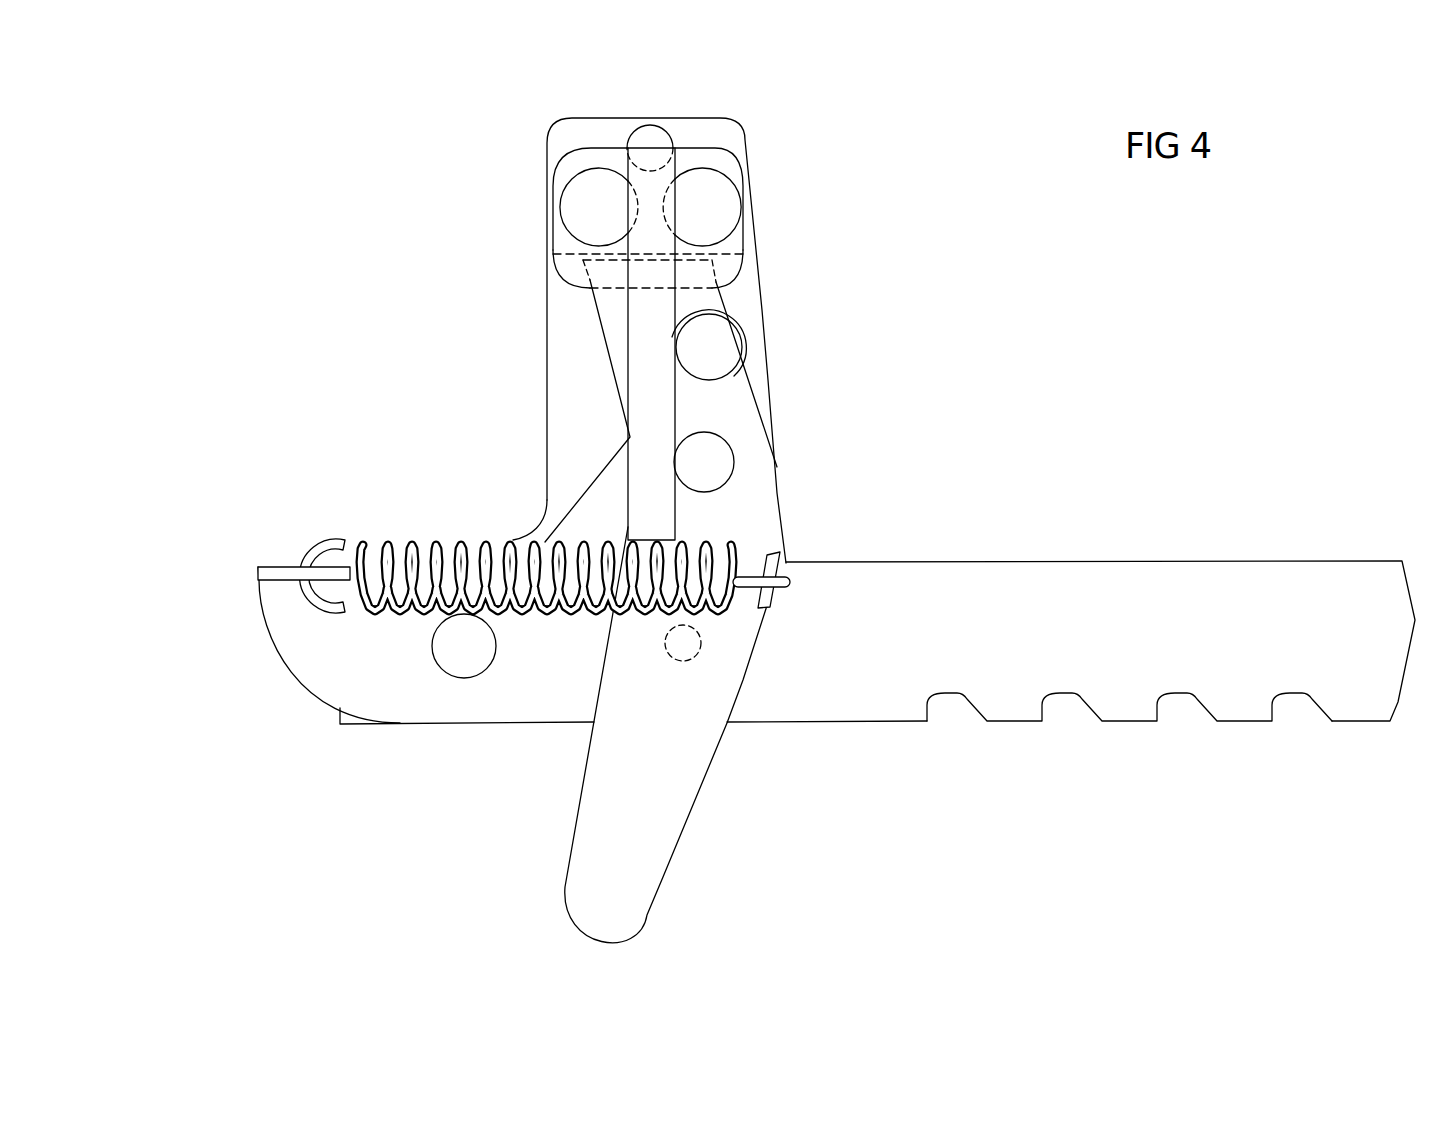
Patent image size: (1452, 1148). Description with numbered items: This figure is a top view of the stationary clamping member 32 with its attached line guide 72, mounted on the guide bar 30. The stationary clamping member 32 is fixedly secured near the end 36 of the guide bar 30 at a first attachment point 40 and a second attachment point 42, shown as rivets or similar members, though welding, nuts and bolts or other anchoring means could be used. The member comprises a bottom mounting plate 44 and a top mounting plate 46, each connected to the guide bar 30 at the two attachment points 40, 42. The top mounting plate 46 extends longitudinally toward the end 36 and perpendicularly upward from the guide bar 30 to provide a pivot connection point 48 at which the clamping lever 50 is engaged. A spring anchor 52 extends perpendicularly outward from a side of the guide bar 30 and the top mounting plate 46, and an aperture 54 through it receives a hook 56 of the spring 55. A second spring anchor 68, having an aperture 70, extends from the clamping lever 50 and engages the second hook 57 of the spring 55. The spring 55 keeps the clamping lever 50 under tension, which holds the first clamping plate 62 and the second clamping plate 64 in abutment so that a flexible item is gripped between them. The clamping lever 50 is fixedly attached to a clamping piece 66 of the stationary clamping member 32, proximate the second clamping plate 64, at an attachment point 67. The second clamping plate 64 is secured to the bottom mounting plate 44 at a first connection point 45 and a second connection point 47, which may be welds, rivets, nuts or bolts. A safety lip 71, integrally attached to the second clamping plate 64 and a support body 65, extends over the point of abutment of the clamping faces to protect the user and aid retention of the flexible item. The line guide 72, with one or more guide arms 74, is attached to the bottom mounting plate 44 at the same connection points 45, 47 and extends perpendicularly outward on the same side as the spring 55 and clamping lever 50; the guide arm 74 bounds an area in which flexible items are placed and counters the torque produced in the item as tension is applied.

The guide bar 30 is at (1100, 621).
The stationary clamping member 32 is at (957, 398).
The end of the guide bar 36 is at (348, 727).
The first attachment point 40 is at (437, 659).
The second attachment point 42 is at (683, 663).
The bottom mounting plate 44 is at (655, 313).
The first connection point 45 is at (727, 197).
The top mounting plate 46 is at (316, 645).
The second connection point 47 is at (580, 197).
The pivot connection point 48 is at (736, 456).
The clamping lever 50 is at (763, 515).
The spring anchor 52 is at (270, 572).
The hook ring 54 is at (296, 563).
The spring 55 is at (460, 545).
The hook 56 is at (335, 537).
The second hook 57 is at (793, 587).
The first clamping plate 62 is at (700, 260).
The second clamping plate 64 is at (695, 274).
The support body 65 is at (683, 201).
The clamping piece 66 is at (769, 347).
The attachment point 67 is at (734, 376).
The second spring anchor 68 is at (770, 570).
The aperture 70 is at (817, 639).
The safety lip 71 is at (573, 283).
The line guide 72 is at (666, 115).
The guide arm 74 is at (645, 370).